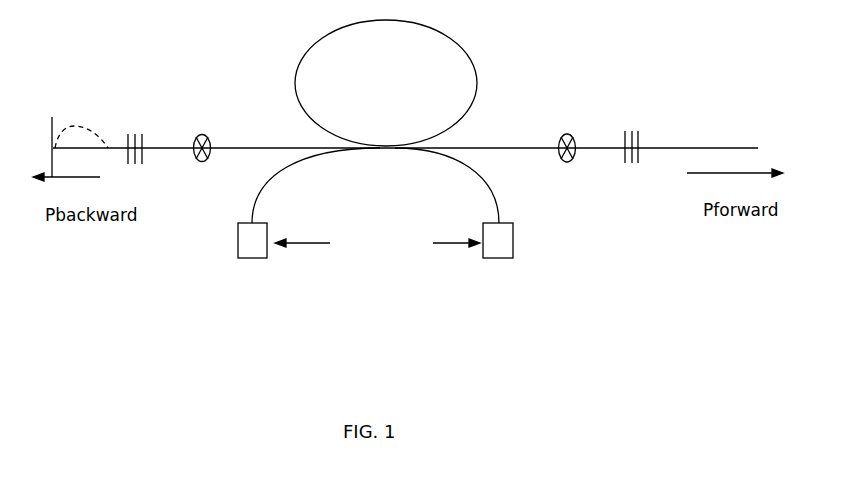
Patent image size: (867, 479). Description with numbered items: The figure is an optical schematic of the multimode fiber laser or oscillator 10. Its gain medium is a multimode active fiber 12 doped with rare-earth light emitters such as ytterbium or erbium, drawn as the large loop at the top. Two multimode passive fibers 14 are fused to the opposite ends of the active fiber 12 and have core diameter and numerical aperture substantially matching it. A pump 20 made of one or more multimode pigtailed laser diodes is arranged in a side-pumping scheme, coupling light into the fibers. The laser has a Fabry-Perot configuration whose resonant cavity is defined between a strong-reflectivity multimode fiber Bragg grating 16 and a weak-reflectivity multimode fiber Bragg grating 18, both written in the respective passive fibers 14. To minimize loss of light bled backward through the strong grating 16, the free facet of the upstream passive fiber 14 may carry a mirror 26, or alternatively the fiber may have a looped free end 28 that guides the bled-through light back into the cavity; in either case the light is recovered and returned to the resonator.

The MM fiber laser 10 is at (195, 90).
The MM fiber 12 is at (384, 59).
The MM passive fibers 14 is at (591, 191).
The strong reflectivity MM fiber Bragg grating 16 is at (138, 196).
The weak reflectivity MM fiber Bragg grating 18 is at (650, 196).
The pump 20 is at (393, 229).
The mirror 26 is at (52, 145).
The looped free end 28 is at (87, 138).